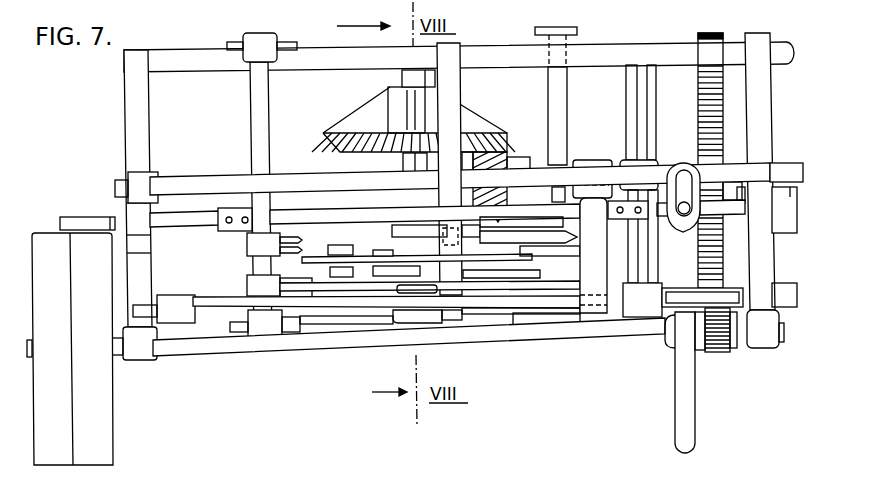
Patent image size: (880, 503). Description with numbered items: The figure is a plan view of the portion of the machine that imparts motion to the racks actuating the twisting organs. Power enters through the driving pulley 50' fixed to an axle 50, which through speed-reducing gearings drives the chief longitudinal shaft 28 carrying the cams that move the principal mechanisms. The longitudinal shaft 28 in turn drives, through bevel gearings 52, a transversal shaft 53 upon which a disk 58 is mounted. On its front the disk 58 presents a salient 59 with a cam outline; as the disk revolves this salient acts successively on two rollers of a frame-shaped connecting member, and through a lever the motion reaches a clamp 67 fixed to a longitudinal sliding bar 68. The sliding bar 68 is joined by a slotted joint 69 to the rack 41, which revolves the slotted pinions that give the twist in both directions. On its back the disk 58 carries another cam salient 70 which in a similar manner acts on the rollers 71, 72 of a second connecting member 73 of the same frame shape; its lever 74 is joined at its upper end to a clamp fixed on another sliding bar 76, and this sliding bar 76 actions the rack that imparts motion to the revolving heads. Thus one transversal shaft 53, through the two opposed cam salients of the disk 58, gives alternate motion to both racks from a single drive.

The chief longitudinal shaft 28 is at (782, 176).
The rack 41 is at (773, 207).
The axle 50 is at (481, 368).
The driving pulley 50' is at (110, 349).
The bevel gearings 52 is at (498, 132).
The transversal shaft 53 is at (408, 78).
The disk 58 is at (330, 262).
The salient 59 is at (407, 271).
The clamp 67 is at (597, 280).
The longitudinal sliding bar 68 is at (492, 307).
The slotted joint 69 is at (682, 176).
The cam salient 70 is at (397, 258).
The roller 71 is at (340, 246).
The roller 72 is at (537, 240).
The connecting member 73 is at (480, 236).
The lever 74 is at (565, 248).
The sliding bar 76 is at (323, 183).